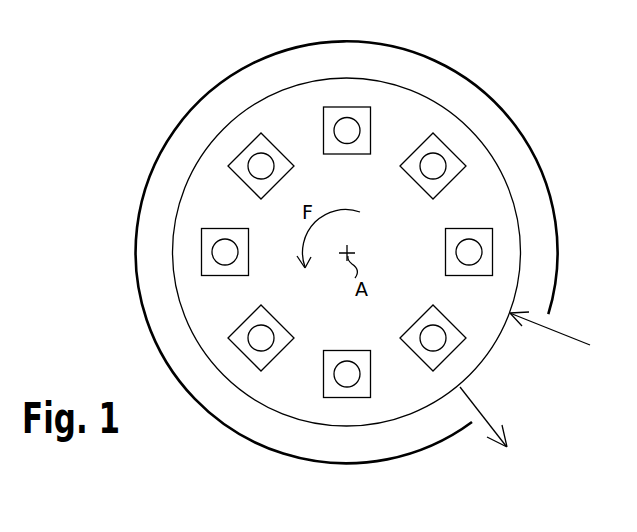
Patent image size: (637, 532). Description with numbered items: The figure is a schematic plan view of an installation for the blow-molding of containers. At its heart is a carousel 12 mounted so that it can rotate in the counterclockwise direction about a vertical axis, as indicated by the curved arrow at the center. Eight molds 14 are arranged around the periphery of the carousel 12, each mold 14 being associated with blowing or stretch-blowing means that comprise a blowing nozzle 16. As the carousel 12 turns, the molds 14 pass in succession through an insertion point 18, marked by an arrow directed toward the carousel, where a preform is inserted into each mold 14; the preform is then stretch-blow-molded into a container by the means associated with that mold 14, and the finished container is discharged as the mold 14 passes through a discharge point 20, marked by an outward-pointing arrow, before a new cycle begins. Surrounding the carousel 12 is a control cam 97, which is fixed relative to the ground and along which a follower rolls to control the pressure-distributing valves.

The carousel 12 is at (410, 113).
The mold 14 is at (457, 183).
The blowing nozzle 16 is at (433, 167).
The insertion point 18 is at (508, 318).
The discharge point 20 is at (462, 388).
The control cam 97 is at (427, 448).